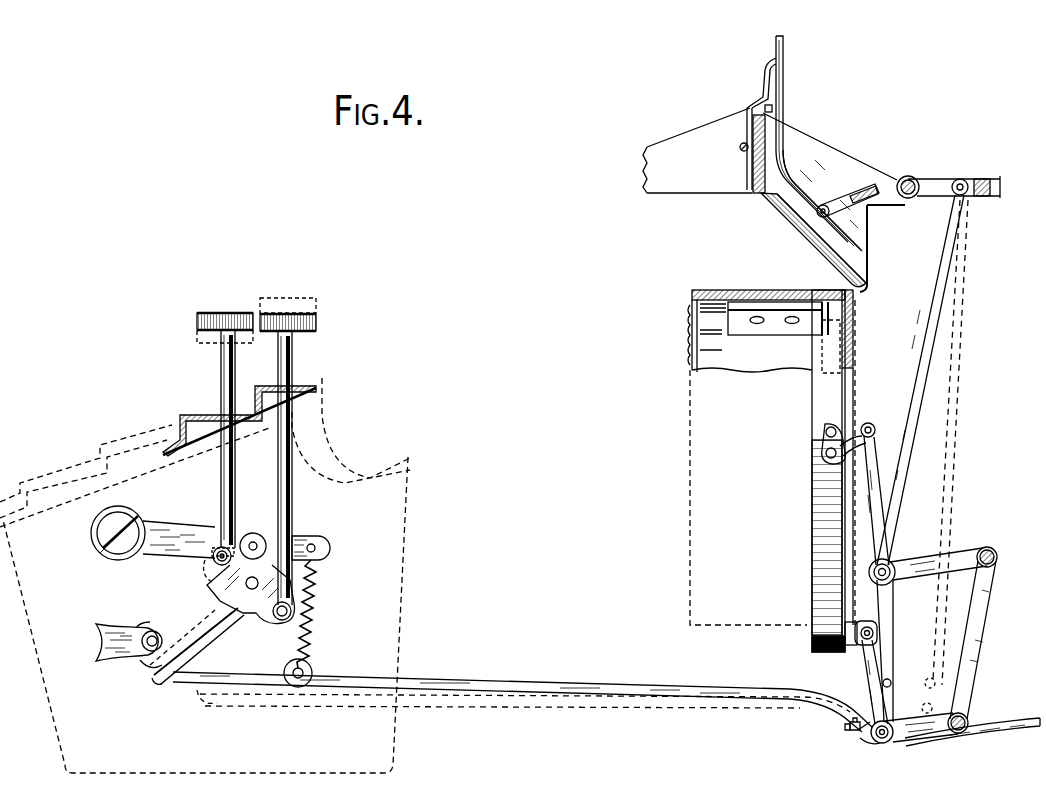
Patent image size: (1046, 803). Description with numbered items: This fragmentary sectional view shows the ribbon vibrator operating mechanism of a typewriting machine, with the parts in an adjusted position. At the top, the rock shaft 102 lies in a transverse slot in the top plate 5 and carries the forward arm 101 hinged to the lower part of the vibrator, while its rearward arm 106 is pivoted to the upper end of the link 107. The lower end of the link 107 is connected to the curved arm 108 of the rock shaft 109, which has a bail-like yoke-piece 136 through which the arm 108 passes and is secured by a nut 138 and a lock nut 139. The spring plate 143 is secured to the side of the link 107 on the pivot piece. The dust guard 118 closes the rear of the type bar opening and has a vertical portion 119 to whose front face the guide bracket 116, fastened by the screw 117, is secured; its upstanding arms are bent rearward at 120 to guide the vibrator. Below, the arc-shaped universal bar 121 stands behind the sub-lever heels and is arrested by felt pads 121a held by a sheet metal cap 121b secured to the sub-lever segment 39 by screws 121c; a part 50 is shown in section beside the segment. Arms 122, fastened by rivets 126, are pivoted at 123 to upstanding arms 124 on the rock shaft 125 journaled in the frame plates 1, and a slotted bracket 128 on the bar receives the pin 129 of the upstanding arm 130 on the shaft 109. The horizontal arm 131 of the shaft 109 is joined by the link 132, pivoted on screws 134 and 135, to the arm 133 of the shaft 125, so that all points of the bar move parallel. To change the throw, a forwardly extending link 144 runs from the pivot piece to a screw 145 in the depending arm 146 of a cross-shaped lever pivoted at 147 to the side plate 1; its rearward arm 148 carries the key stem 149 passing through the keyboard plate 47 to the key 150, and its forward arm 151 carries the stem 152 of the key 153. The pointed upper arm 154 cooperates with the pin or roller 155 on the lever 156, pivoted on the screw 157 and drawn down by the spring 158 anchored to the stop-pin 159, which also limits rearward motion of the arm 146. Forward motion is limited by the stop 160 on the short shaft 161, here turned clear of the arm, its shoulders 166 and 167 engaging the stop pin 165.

The frame plates 1 is at (409, 503).
The top plate 5 is at (663, 194).
The sub-lever segment 39 is at (695, 296).
The keyboard plate 47 is at (305, 385).
The frame member 50 is at (688, 341).
The arm 101 is at (856, 198).
The rock shaft 102 is at (908, 199).
The arm 106 is at (938, 180).
The link 107 is at (933, 433).
The arm 108 is at (1021, 728).
The rock shaft 109 is at (878, 745).
The guide bracket 116 is at (763, 95).
The screw 117 is at (743, 152).
The dust guard 118 is at (786, 216).
The vertical portion 119 is at (770, 136).
The bent upper end 120 is at (776, 62).
The universal bar 121 is at (812, 579).
The pad 121a is at (825, 302).
The sheet metal cap 121b is at (772, 302).
The screws 121c is at (760, 325).
The arm 122 is at (852, 430).
The pivot 123 is at (876, 430).
The upstanding arm 124 is at (882, 485).
The rock shaft 125 is at (880, 585).
The rivets 126 is at (822, 442).
The bracket 128 is at (857, 626).
The pin 129 is at (860, 646).
The upstanding arm 130 is at (866, 684).
The horizontal arm 131 is at (900, 742).
The link 132 is at (976, 640).
The arm 133 is at (960, 552).
The screw 134 is at (968, 723).
The screw 135 is at (988, 549).
The yoke-piece 136 is at (860, 744).
The nut 138 is at (849, 724).
The lock nut 139 is at (848, 733).
The spring plate 143 is at (897, 682).
The link 144 is at (576, 685).
The screw 145 is at (185, 672).
The depending arm 146 is at (221, 608).
The pivot 147 is at (252, 590).
The rearwardly extending arm 148 is at (280, 622).
The key stem 149 is at (292, 480).
The key 150 is at (318, 321).
The forwardly extending arm 151 is at (211, 562).
The stem 152 is at (235, 452).
The key 153 is at (208, 314).
The upwardly extending arm 154 is at (303, 535).
The pin or roller 155 is at (252, 533).
The lever 156 is at (178, 526).
The screw 157 is at (118, 511).
The spring 158 is at (316, 597).
The stop-pin 159 is at (308, 671).
The stop 160 is at (97, 655).
The short shaft 161 is at (156, 630).
The stop pin 165 is at (155, 685).
The shoulder 166 is at (143, 668).
The shoulder 167 is at (147, 624).